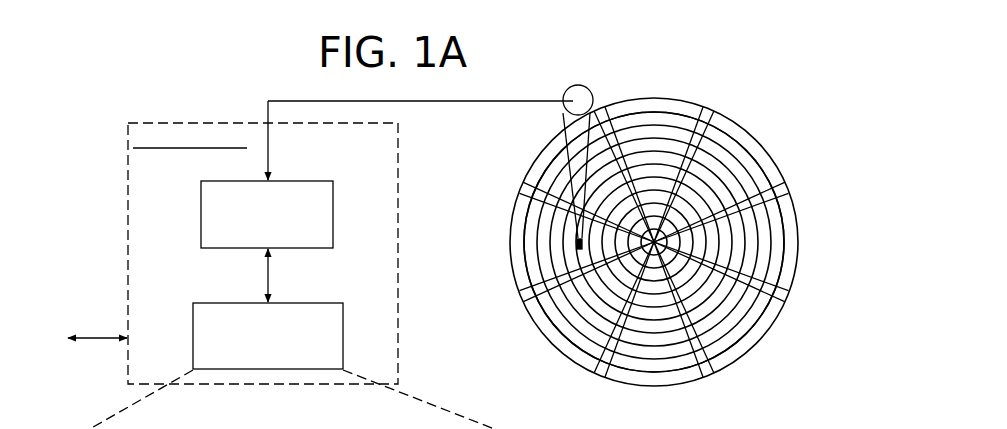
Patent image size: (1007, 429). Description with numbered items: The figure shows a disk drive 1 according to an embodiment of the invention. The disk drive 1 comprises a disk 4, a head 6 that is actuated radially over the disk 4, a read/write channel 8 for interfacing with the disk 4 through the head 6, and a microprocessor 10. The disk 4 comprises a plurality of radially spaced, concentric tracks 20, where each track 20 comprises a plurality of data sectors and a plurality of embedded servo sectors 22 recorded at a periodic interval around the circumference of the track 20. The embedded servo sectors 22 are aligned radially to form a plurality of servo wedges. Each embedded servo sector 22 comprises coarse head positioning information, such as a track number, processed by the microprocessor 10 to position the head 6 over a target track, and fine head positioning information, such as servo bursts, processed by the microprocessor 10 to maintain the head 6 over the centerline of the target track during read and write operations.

The disk drive 1 is at (80, 122).
The disk 4 is at (740, 118).
The head 6 is at (576, 254).
The read/write channel 8 is at (333, 210).
The microprocessor 10 is at (344, 333).
The tracks 20 is at (653, 118).
The embedded servo sectors 22 is at (602, 112).